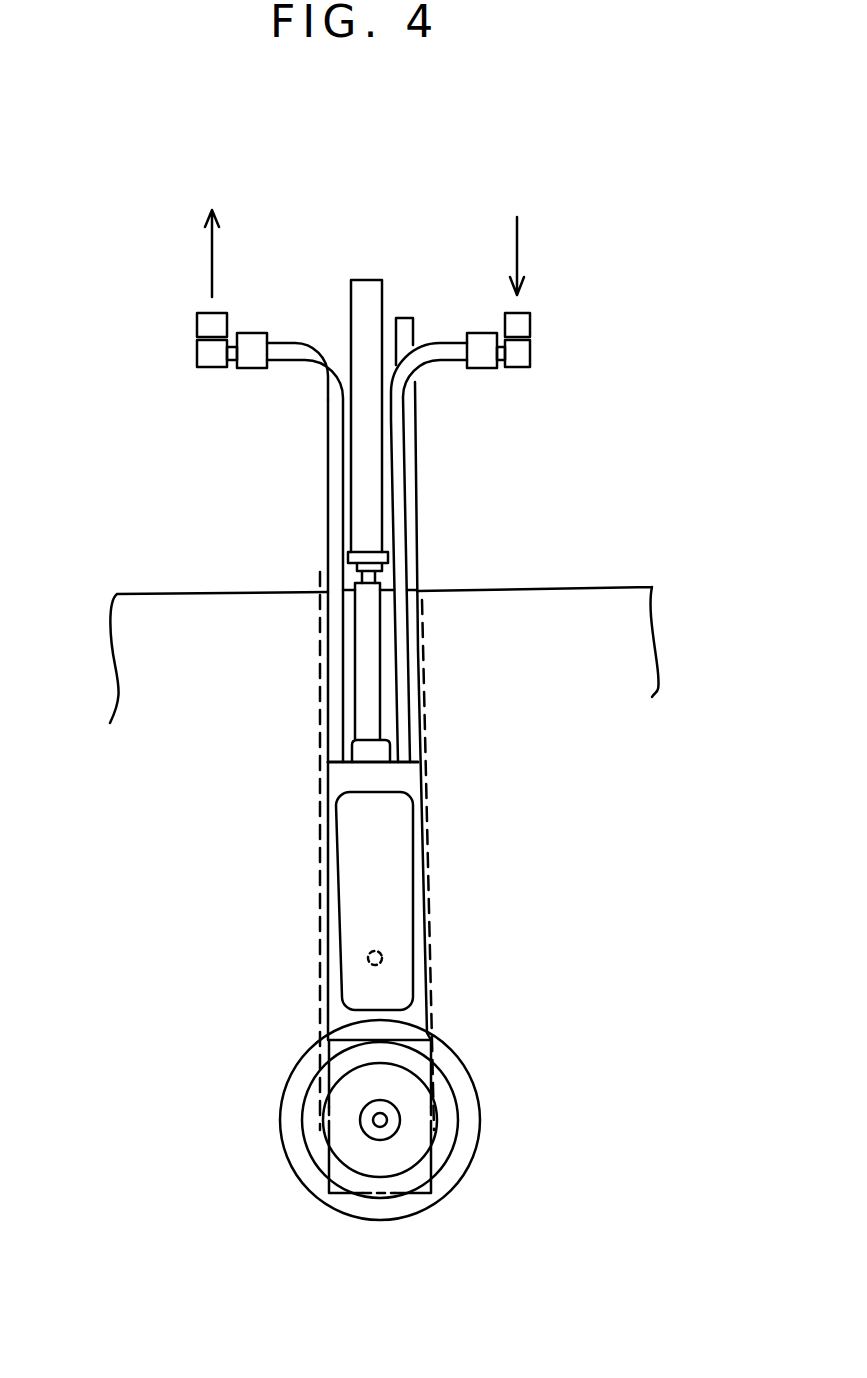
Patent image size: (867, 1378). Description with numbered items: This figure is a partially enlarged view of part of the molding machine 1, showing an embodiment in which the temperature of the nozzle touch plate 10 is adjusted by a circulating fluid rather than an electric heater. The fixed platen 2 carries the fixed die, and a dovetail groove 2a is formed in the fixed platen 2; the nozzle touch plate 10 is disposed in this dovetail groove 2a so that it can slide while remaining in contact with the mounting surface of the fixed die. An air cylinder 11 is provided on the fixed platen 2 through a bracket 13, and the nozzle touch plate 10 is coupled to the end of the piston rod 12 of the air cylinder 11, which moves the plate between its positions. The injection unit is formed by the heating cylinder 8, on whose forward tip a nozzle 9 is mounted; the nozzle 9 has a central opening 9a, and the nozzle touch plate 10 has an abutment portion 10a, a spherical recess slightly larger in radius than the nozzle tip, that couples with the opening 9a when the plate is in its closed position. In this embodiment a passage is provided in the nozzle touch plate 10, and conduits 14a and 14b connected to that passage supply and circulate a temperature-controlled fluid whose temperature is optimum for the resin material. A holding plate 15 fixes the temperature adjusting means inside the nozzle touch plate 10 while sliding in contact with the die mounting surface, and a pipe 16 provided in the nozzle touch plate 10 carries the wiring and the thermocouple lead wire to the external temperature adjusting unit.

The molding machine 1 is at (130, 563).
The fixed platen 2 is at (615, 613).
The dovetail groove 2a is at (428, 650).
The heating cylinder 8 is at (447, 1117).
The nozzle 9 is at (394, 1131).
The central opening of the nozzle 9a is at (380, 1125).
The nozzle touch plate 10 is at (398, 1020).
The abutment portion 10a is at (365, 960).
The air cylinder 11 is at (360, 315).
The piston rod 12 is at (365, 650).
The bracket 13 is at (367, 552).
The conduit 14a is at (400, 432).
The conduit 14b is at (310, 373).
The holding plate 15 is at (388, 867).
The pipe 16 is at (407, 323).